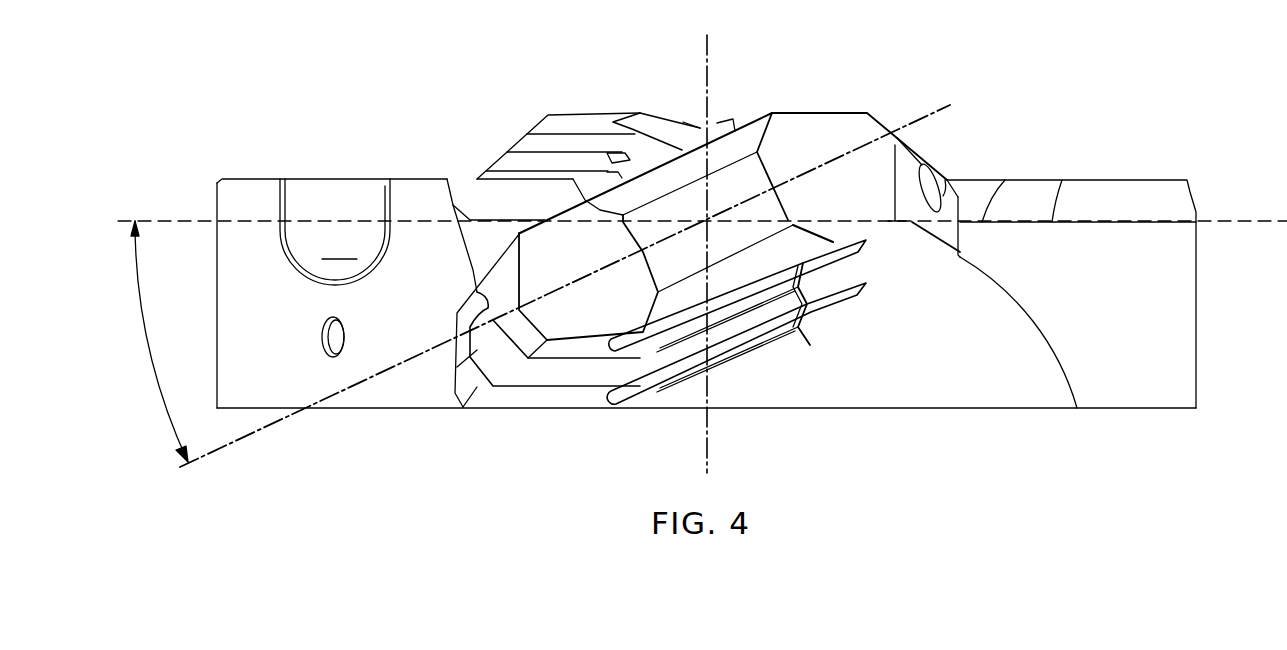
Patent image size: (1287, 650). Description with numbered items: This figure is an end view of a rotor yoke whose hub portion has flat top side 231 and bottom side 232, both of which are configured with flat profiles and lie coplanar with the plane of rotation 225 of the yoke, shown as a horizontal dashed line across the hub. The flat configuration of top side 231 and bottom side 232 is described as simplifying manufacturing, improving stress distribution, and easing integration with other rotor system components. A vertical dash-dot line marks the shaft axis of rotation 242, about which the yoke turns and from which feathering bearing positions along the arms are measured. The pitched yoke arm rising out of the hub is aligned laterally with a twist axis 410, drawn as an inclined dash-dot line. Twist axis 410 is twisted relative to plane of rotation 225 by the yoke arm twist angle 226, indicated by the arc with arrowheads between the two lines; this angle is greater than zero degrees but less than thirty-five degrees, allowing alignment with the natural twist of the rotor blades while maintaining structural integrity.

The plane of rotation 225 is at (170, 220).
The yoke arm twist angle 226 is at (144, 351).
The top side 231 is at (248, 178).
The bottom side 232 is at (392, 409).
The shaft axis of rotation 242 is at (704, 56).
The twist axis 410 is at (940, 110).